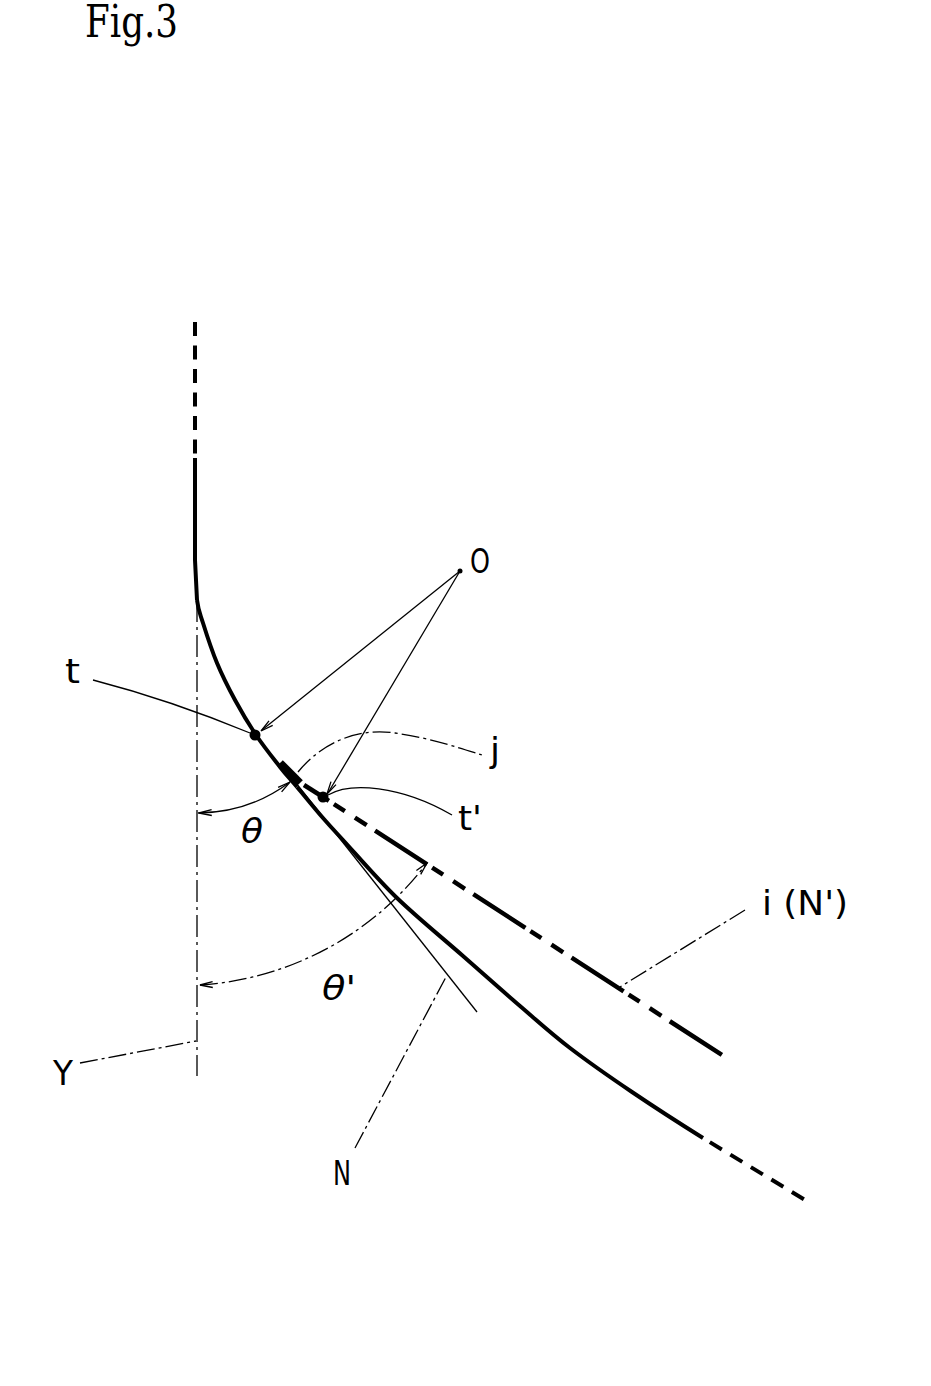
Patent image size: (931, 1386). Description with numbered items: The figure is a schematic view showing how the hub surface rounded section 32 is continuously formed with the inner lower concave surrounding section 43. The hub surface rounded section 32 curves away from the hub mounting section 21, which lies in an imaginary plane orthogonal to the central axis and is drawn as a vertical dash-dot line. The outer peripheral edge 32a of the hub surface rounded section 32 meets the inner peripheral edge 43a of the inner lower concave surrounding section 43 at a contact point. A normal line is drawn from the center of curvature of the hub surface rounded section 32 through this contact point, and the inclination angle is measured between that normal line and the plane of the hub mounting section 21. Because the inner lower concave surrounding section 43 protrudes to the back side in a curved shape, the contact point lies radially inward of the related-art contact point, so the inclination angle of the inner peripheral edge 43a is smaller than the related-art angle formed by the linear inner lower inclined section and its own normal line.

The hub mounting section 21 is at (193, 522).
The hub surface rounded section 32 is at (215, 658).
The outer peripheral edge of the hub surface rounded section 32a is at (260, 729).
The inner lower concave surrounding section 43 is at (560, 1042).
The inner peripheral edge of the inner lower concave surrounding section 43a is at (288, 779).